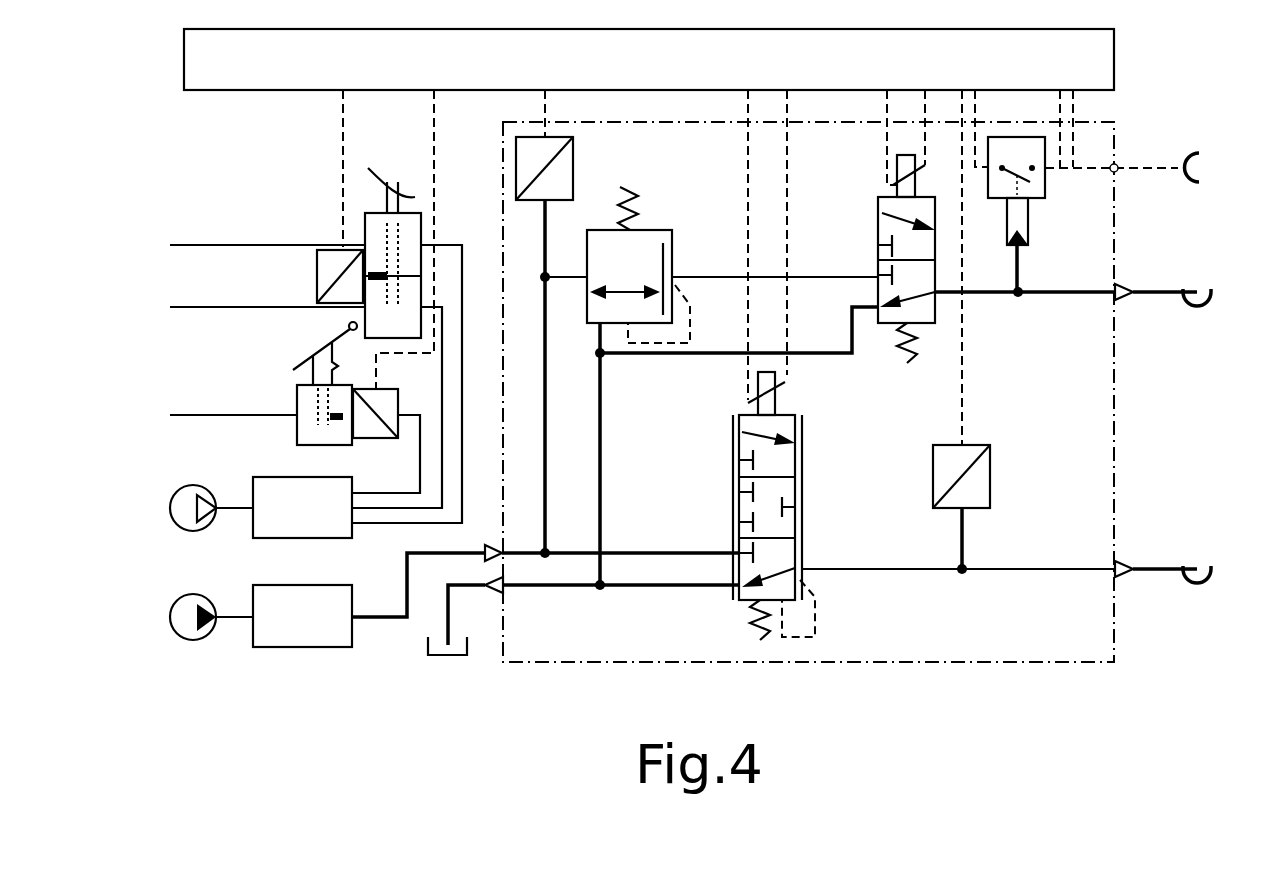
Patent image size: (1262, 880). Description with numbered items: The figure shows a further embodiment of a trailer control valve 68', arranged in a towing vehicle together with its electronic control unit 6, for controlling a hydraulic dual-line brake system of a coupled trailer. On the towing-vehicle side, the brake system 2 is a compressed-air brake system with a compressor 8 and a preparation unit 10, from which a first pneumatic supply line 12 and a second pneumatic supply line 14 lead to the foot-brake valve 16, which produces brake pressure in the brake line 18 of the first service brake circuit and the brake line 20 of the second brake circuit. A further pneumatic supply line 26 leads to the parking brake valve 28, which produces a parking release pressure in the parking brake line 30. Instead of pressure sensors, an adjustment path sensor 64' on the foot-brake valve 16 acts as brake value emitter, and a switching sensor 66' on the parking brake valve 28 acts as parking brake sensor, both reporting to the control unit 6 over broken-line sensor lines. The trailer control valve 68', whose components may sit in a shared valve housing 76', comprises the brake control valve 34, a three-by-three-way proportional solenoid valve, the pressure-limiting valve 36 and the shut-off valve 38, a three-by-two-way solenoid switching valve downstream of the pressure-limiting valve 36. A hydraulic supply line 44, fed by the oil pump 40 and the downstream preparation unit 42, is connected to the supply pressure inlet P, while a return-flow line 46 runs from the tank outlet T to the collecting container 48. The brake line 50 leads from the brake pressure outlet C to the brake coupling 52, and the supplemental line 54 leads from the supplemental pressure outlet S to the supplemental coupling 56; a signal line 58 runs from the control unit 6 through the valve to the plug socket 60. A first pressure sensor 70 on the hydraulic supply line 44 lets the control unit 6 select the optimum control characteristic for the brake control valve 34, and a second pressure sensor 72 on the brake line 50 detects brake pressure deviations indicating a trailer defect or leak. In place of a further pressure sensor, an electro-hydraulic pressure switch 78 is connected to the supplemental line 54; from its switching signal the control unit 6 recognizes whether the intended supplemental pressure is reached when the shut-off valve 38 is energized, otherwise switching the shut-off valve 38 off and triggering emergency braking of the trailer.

The brake system 2 is at (118, 383).
The electronic control unit 6 is at (641, 71).
The compressor 8 is at (170, 510).
The preparation unit 10 is at (291, 519).
The first pneumatic supply line 12 is at (447, 242).
The second pneumatic supply line 14 is at (442, 377).
The foot-brake valve 16 is at (393, 172).
The brake line 18 is at (197, 245).
The brake line 20 is at (197, 307).
The pneumatic supply line 26 is at (418, 477).
The parking brake valve 28 is at (297, 400).
The parking brake line 30 is at (197, 415).
The brake control valve 34 is at (733, 503).
The pressure-limiting valve 36 is at (653, 229).
The shut-off valve 38 is at (878, 255).
The oil pump 40 is at (170, 617).
The preparation unit 42 is at (291, 628).
The hydraulic supply line 44 is at (407, 578).
The return-flow line 46 is at (448, 618).
The collecting container 48 is at (440, 657).
The brake line 50 is at (1162, 565).
The brake coupling 52 is at (1193, 585).
The supplemental line 54 is at (1150, 288).
The supplemental coupling 56 is at (1193, 308).
The signal line 58 is at (1162, 165).
The plug socket 60 is at (1193, 185).
The adjustment path sensor 64' is at (306, 276).
The switching sensor 66' is at (380, 428).
The trailer control valve 68' is at (882, 392).
The pressure sensor 70 is at (533, 203).
The pressure sensor 72 is at (990, 480).
The valve housing 76' is at (808, 392).
The pressure switch 78 is at (1045, 178).